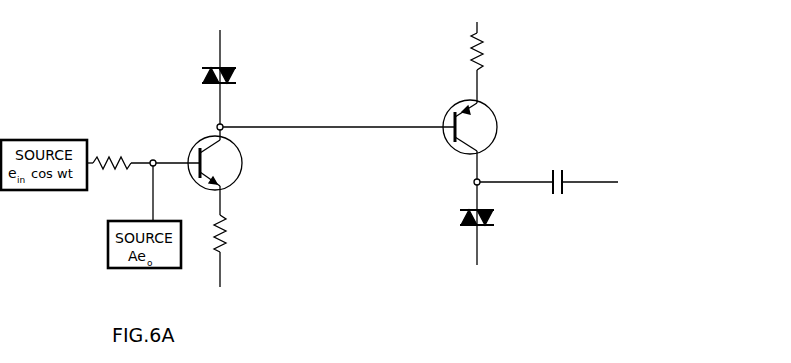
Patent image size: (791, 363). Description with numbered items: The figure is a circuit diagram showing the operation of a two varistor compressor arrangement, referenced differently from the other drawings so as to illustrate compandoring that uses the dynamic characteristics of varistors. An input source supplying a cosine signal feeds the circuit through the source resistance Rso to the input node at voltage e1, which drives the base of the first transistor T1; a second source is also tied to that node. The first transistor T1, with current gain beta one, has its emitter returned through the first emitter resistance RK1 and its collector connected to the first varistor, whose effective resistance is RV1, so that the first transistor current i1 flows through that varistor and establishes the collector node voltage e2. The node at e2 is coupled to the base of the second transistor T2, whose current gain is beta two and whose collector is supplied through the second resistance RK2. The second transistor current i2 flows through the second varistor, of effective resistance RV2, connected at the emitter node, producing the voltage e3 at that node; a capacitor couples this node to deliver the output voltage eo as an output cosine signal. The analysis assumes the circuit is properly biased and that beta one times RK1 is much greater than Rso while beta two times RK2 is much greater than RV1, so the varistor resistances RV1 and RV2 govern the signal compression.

The source resistance Rso is at (128, 162).
The input node voltage e1 is at (152, 161).
The first transistor T1 is at (197, 145).
The first varistor effective resistance RV1 is at (237, 82).
The first-stage output voltage e2 is at (223, 124).
The first emitter resistance RK1 is at (226, 247).
The first transistor current i1 is at (265, 150).
The second transistor T2 is at (451, 107).
The second collector resistance RK2 is at (480, 69).
The second transistor current i2 is at (523, 102).
The second-stage output node voltage e3 is at (481, 179).
The output voltage eo is at (593, 182).
The second varistor effective resistance RV2 is at (494, 224).